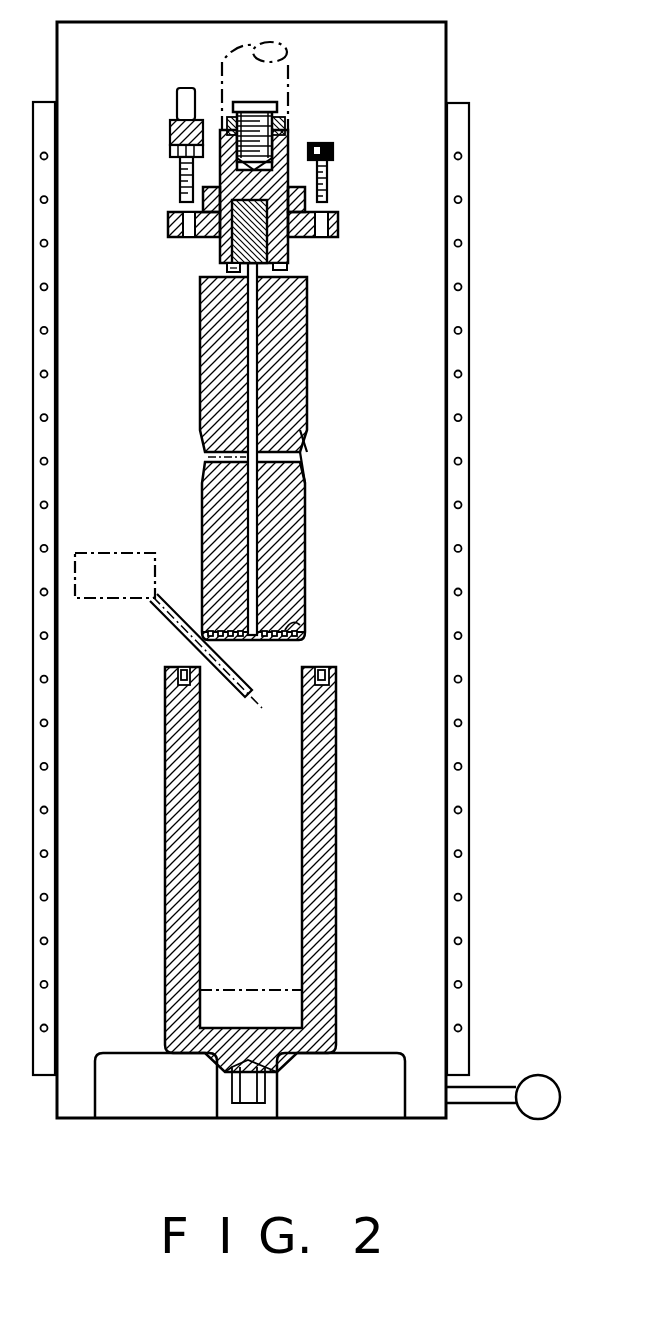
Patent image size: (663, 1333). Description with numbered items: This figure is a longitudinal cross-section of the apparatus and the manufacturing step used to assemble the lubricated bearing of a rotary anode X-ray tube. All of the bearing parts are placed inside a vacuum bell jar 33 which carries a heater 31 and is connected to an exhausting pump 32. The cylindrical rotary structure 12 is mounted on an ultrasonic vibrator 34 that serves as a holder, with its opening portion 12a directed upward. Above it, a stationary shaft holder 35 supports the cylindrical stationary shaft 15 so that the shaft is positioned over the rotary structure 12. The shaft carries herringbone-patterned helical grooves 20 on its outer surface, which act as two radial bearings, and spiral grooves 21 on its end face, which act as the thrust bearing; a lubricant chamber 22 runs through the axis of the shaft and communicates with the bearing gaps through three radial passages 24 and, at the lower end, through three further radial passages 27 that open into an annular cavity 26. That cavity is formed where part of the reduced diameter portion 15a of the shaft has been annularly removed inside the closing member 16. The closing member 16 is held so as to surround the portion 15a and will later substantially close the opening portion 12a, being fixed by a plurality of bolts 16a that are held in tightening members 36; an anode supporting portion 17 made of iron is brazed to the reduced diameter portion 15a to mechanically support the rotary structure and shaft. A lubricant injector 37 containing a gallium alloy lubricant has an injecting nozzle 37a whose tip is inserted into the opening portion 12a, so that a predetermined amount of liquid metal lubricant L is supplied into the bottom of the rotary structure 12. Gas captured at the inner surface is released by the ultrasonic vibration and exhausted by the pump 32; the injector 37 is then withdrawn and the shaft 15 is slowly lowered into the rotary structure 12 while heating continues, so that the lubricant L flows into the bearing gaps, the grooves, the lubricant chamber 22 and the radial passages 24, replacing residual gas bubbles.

The rotary structure 12 is at (336, 822).
The opening portion 12a is at (313, 667).
The stationary shaft 15 is at (302, 427).
The reduced diameter portion 15a is at (227, 248).
The closing member 16 is at (338, 230).
The bolts 16a is at (180, 172).
The anode supporting portion 17 is at (283, 142).
The helical grooves 20 is at (307, 543).
The spiral grooves 21 is at (293, 628).
The lubricant chamber 22 is at (266, 343).
The radial passages 24 is at (293, 458).
The annular cavity 26 is at (233, 268).
The radial passages 27 is at (276, 270).
The heater 31 is at (469, 637).
The exhausting pump 32 is at (540, 1075).
The vacuum bell jar 33 is at (446, 52).
The ultrasonic vibrator 34 is at (365, 1118).
The stationary shaft holder 35 is at (285, 78).
The tightening members 36 is at (177, 102).
The lubricant injector 37 is at (130, 553).
The injecting nozzle 37a is at (252, 702).
The liquid metal lubricant L is at (247, 987).